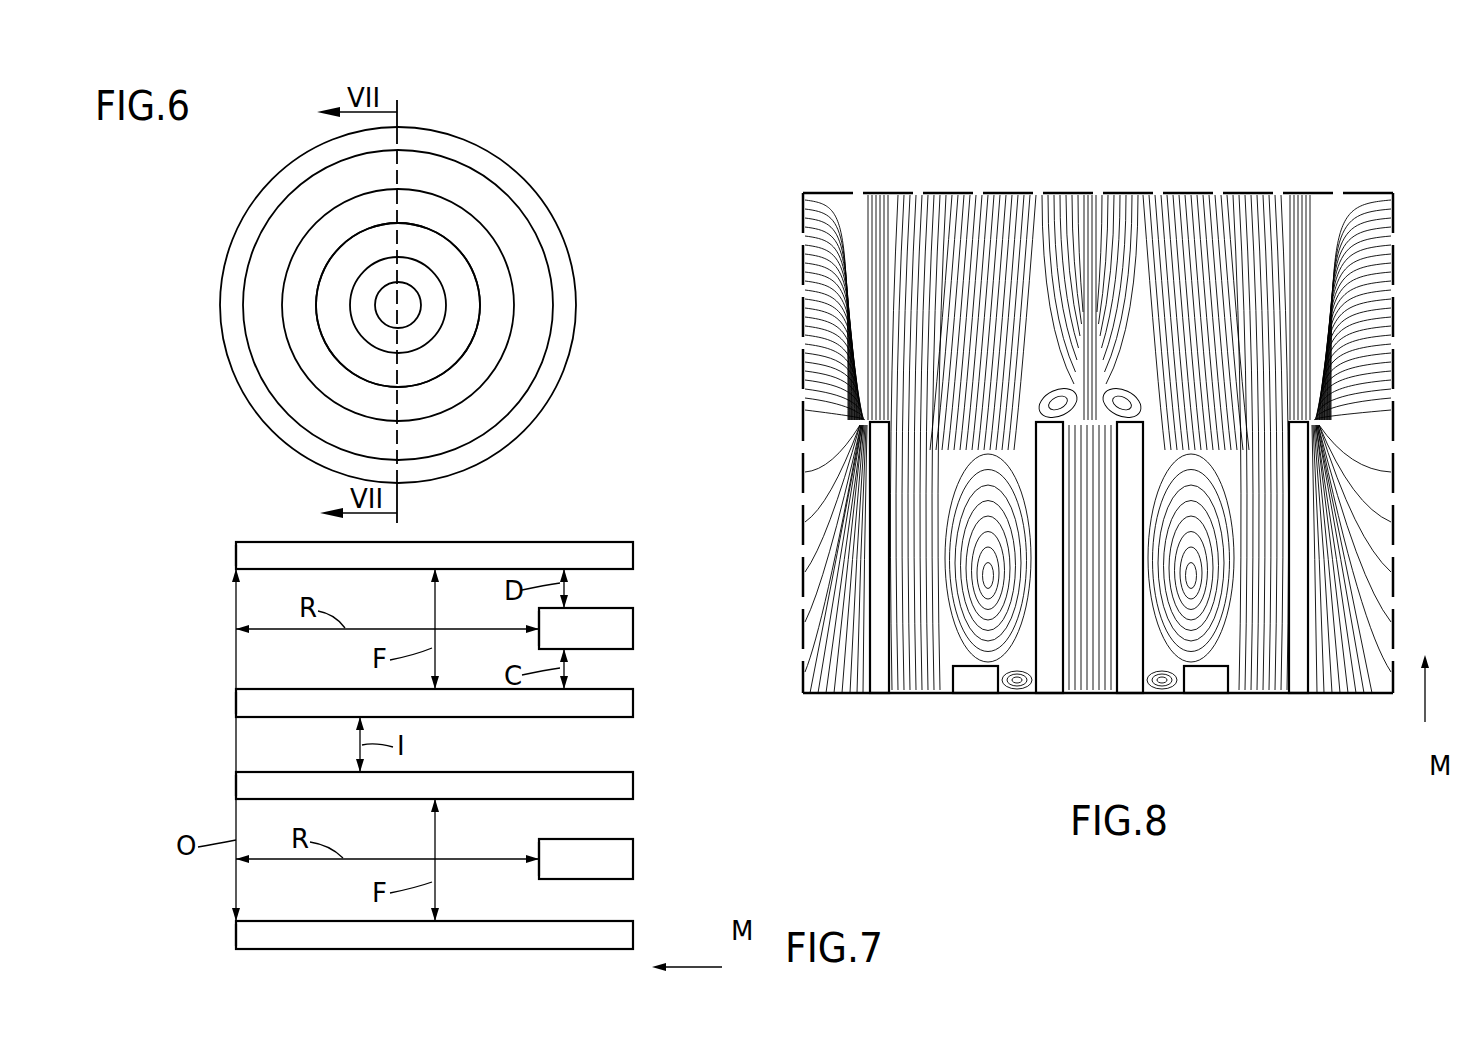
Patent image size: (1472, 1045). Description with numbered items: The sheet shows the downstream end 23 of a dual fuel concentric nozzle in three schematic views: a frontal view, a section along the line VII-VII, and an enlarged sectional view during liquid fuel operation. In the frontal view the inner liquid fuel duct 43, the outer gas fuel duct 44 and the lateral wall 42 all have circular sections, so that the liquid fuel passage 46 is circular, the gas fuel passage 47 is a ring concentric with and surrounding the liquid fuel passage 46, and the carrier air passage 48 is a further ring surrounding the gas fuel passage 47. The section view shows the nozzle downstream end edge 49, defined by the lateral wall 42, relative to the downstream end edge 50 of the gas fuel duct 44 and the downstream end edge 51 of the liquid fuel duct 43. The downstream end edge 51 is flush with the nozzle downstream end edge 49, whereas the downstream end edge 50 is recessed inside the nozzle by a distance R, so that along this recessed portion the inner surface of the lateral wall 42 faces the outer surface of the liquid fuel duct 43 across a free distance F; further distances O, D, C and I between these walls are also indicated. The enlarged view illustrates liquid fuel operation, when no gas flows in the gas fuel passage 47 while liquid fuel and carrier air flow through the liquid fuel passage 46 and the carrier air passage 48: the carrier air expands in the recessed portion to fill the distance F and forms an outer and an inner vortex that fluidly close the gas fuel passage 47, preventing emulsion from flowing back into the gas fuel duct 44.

In FIG. 6, the downstream end 23 is at (581, 164).
In FIG. 7, the downstream end 23 is at (190, 527).
In FIG. 8, the downstream end 23 is at (1401, 370).
In FIG. 6, the lateral wall 42 is at (554, 254).
In FIG. 7, the lateral wall 42 is at (562, 542).
In FIG. 8, the lateral wall 42 is at (878, 694).
In FIG. 6, the liquid fuel duct 43 is at (421, 333).
In FIG. 7, the liquid fuel duct 43 is at (610, 708).
In FIG. 8, the liquid fuel duct 43 is at (1060, 693).
In FIG. 6, the gas fuel duct 44 is at (498, 302).
In FIG. 7, the gas fuel duct 44 is at (608, 634).
In FIG. 8, the gas fuel duct 44 is at (978, 693).
In FIG. 6, the liquid fuel passage 46 is at (392, 298).
In FIG. 7, the liquid fuel passage 46 is at (592, 760).
In FIG. 8, the liquid fuel passage 46 is at (1088, 705).
In FIG. 6, the gas fuel passage 47 is at (337, 306).
In FIG. 7, the gas fuel passage 47 is at (592, 680).
In FIG. 8, the gas fuel passage 47 is at (1014, 705).
In FIG. 6, the carrier air passage 48 is at (278, 364).
In FIG. 7, the carrier air passage 48 is at (592, 600).
In FIG. 8, the carrier air passage 48 is at (922, 705).
In FIG. 7, the nozzle downstream end edge 49 is at (236, 548).
In FIG. 7, the downstream end edge of the gas fuel duct 50 is at (539, 632).
In FIG. 7, the downstream end edge of the liquid fuel duct 51 is at (236, 700).